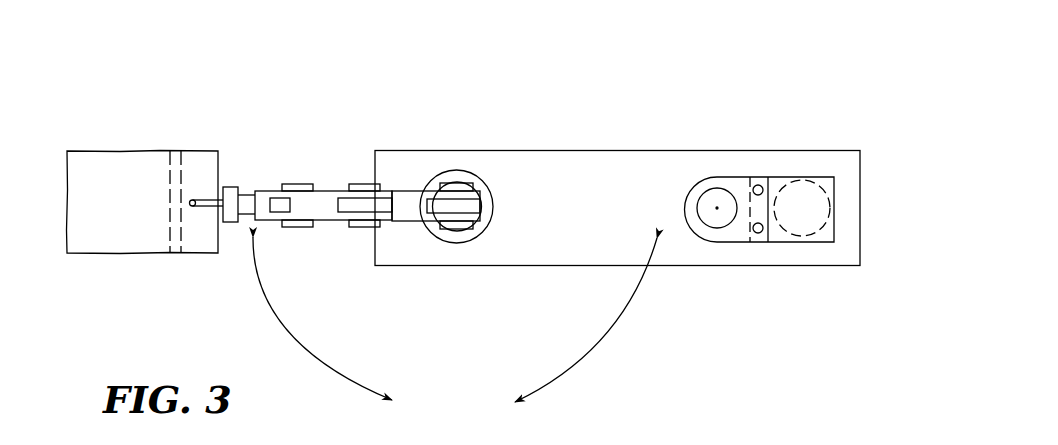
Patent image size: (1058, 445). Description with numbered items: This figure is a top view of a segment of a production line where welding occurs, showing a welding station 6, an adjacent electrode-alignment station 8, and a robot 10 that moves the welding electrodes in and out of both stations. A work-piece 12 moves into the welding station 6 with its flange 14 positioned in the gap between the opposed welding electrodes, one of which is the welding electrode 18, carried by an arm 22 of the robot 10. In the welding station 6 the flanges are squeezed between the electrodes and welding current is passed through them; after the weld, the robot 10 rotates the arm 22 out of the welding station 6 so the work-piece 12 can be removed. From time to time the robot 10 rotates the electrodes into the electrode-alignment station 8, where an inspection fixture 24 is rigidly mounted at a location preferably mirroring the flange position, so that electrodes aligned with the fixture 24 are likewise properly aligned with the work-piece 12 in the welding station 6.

The welding station 6 is at (240, 132).
The electrode-alignment station 8 is at (745, 168).
The robot 10 is at (480, 176).
The work-piece 12 is at (118, 160).
The flange 14 is at (195, 156).
The welding electrode 18 is at (200, 198).
The arm 22 is at (323, 198).
The inspection fixture 24 is at (712, 178).